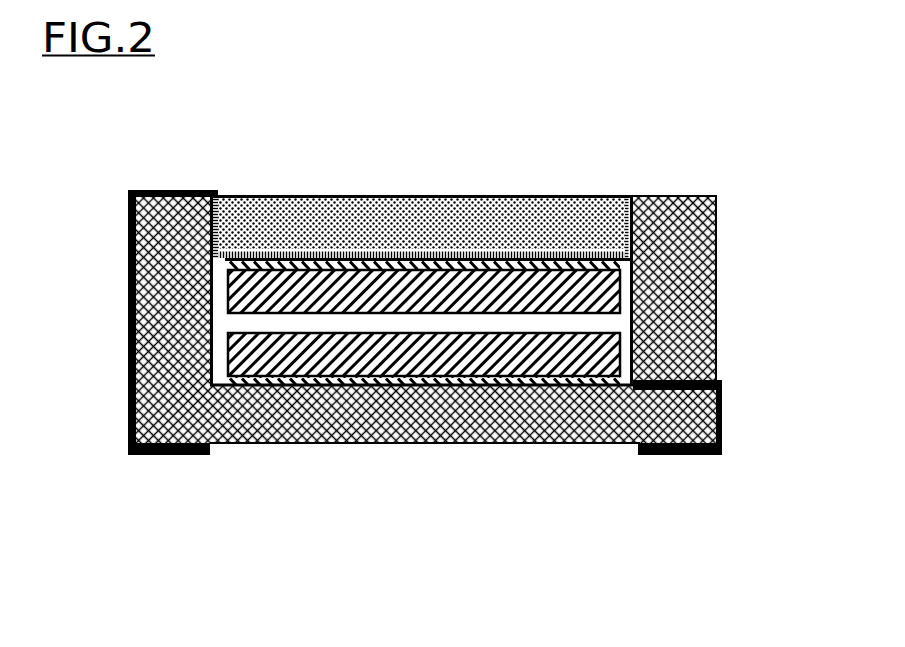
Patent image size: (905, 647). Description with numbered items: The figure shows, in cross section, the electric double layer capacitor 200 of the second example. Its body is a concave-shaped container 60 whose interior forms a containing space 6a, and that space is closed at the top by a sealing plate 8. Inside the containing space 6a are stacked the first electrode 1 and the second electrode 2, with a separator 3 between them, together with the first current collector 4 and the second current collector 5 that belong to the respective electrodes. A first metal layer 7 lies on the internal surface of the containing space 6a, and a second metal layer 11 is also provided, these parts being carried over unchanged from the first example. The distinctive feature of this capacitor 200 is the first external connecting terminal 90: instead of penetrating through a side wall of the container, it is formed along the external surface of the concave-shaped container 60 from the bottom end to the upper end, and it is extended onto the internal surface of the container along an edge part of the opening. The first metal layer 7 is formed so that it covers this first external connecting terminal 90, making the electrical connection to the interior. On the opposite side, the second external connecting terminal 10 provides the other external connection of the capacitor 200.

The first electrode 1 is at (236, 302).
The second electrode 2 is at (238, 369).
The separator 3 is at (603, 321).
The first current collector 4 is at (283, 261).
The second current collector 5 is at (358, 386).
The containing space 6a is at (497, 168).
The first metal layer 7 is at (636, 194).
The sealing plate 8 is at (445, 218).
The second external connecting terminal 10 is at (720, 426).
The second metal layer 11 is at (586, 194).
The concave-shaped container 60 is at (433, 403).
The first external connecting terminal 90 is at (135, 453).
The electric double layer capacitor 200 is at (492, 642).